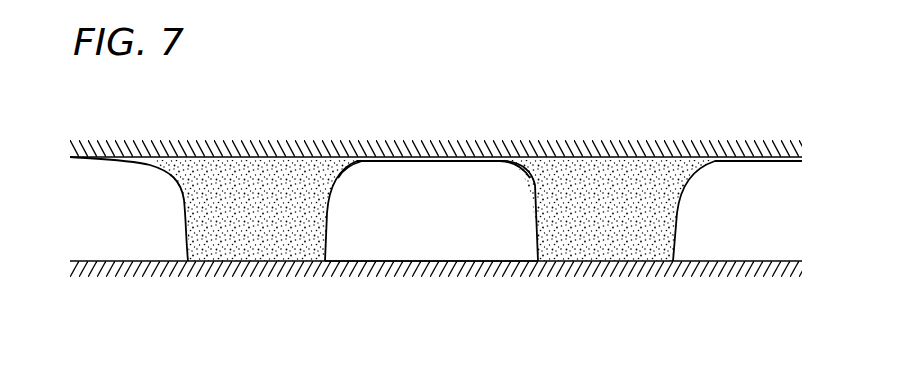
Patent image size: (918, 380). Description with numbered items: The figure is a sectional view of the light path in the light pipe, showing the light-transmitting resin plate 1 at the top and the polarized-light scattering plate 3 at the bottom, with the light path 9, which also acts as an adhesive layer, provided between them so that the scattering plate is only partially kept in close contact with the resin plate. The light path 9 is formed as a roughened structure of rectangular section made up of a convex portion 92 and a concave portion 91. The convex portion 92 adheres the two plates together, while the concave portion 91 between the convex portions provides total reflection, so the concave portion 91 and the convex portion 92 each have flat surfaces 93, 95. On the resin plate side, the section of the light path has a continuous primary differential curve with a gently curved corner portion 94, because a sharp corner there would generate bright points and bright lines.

The light-transmitting resin plate 1 is at (513, 117).
The polarized-light scattering plate 3 is at (553, 305).
The light path 9 is at (716, 217).
The concave portion 91 is at (408, 247).
The convex portion 92 is at (193, 192).
The flat surface 93 is at (247, 257).
The corner portion 94 is at (338, 177).
The flat surface 95 is at (427, 162).